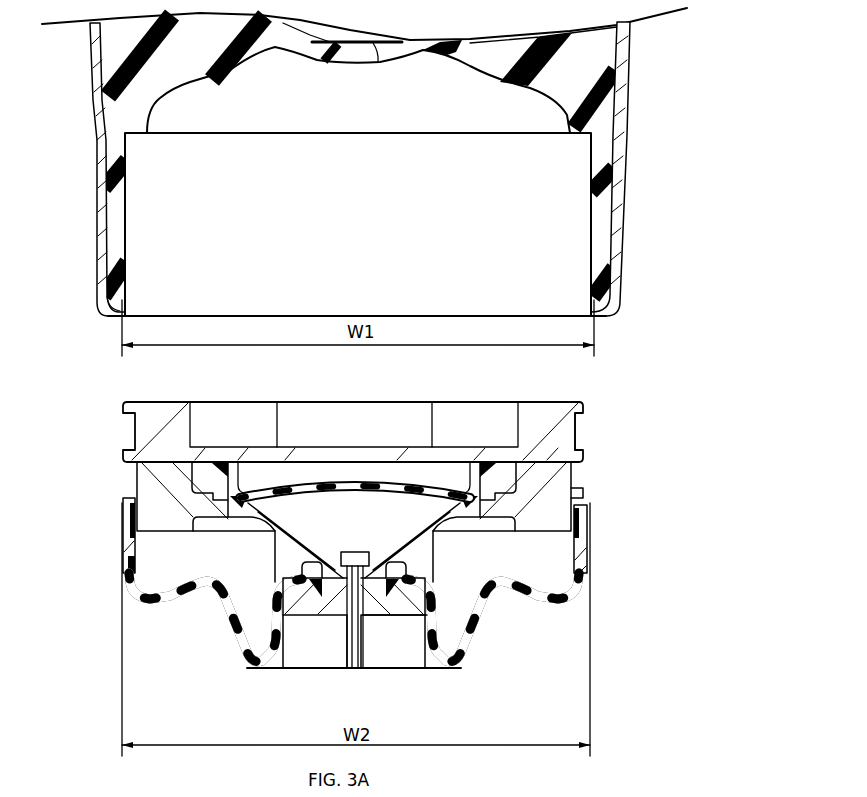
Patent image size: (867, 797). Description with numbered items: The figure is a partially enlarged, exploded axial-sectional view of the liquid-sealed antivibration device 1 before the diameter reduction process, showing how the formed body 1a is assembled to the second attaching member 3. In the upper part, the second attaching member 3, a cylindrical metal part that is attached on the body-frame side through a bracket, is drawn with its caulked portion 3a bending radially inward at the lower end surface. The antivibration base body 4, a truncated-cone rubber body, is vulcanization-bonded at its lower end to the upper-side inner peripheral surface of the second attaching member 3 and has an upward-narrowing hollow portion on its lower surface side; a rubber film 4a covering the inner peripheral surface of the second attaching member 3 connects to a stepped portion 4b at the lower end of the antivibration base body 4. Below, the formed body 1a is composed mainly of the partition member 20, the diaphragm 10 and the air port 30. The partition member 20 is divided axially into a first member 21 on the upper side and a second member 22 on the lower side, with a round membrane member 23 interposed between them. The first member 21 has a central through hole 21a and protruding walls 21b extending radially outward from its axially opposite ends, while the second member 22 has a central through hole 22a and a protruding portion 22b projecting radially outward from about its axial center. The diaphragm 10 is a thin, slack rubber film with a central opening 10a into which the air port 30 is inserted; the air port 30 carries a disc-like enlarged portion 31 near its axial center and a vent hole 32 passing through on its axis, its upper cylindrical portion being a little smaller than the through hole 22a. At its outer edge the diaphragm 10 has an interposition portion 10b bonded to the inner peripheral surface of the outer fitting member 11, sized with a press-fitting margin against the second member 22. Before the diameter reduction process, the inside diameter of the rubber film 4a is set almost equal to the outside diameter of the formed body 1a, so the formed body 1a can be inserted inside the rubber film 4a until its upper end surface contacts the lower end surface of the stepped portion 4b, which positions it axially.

The liquid-sealed antivibration device 1 is at (733, 796).
The formed body 1a is at (690, 372).
The second attaching member 3 is at (100, 147).
The caulked portion 3a is at (110, 311).
The antivibration base body 4 is at (548, 85).
The rubber film 4a is at (118, 241).
The stepped portion 4b is at (170, 80).
The diaphragm 10 is at (351, 596).
The opening 10a is at (318, 598).
The interposition portion 10b is at (137, 537).
The outer fitting member 11 is at (590, 538).
The partition member 20 is at (366, 483).
The first member 21 is at (410, 423).
The through hole 21a is at (383, 447).
The protruding walls 21b is at (578, 412).
The second member 22 is at (408, 522).
The through hole 22a is at (354, 550).
The protruding portion 22b is at (578, 498).
The membrane member 23 is at (313, 496).
The air port 30 is at (384, 633).
The enlarged portion 31 is at (385, 618).
The vent hole 32 is at (356, 668).